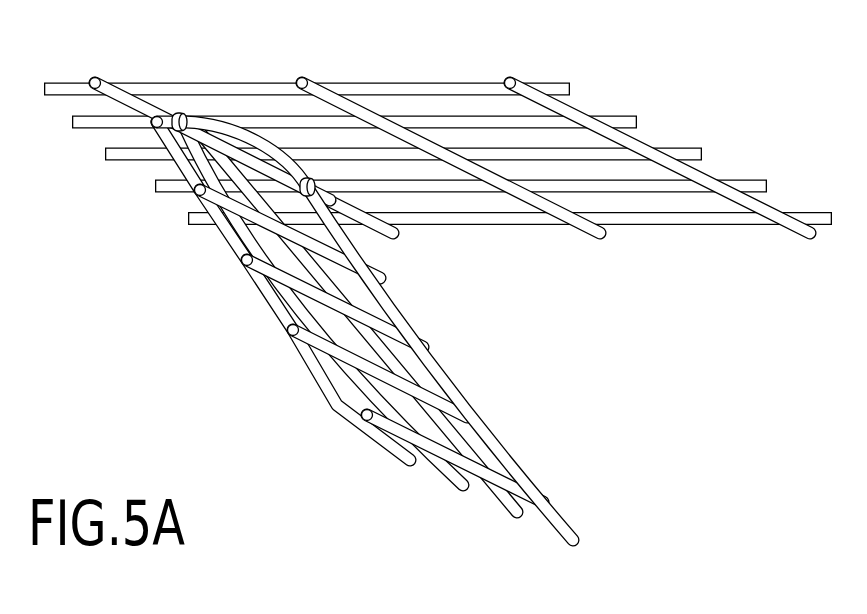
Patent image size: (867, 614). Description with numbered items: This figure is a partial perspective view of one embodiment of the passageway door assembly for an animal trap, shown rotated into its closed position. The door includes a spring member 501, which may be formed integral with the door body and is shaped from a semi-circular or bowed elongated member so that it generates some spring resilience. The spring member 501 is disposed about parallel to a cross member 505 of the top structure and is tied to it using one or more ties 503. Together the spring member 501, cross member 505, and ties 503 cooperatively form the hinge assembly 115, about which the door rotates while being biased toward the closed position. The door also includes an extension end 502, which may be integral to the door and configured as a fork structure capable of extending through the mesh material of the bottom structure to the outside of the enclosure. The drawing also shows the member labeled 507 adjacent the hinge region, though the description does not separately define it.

The hinge assembly 115 is at (438, 279).
The spring member 501 is at (153, 119).
The extension end 502 is at (440, 478).
The ties 503 is at (246, 150).
The cross member 505 is at (95, 81).
The bent tubular member 507 is at (250, 136).